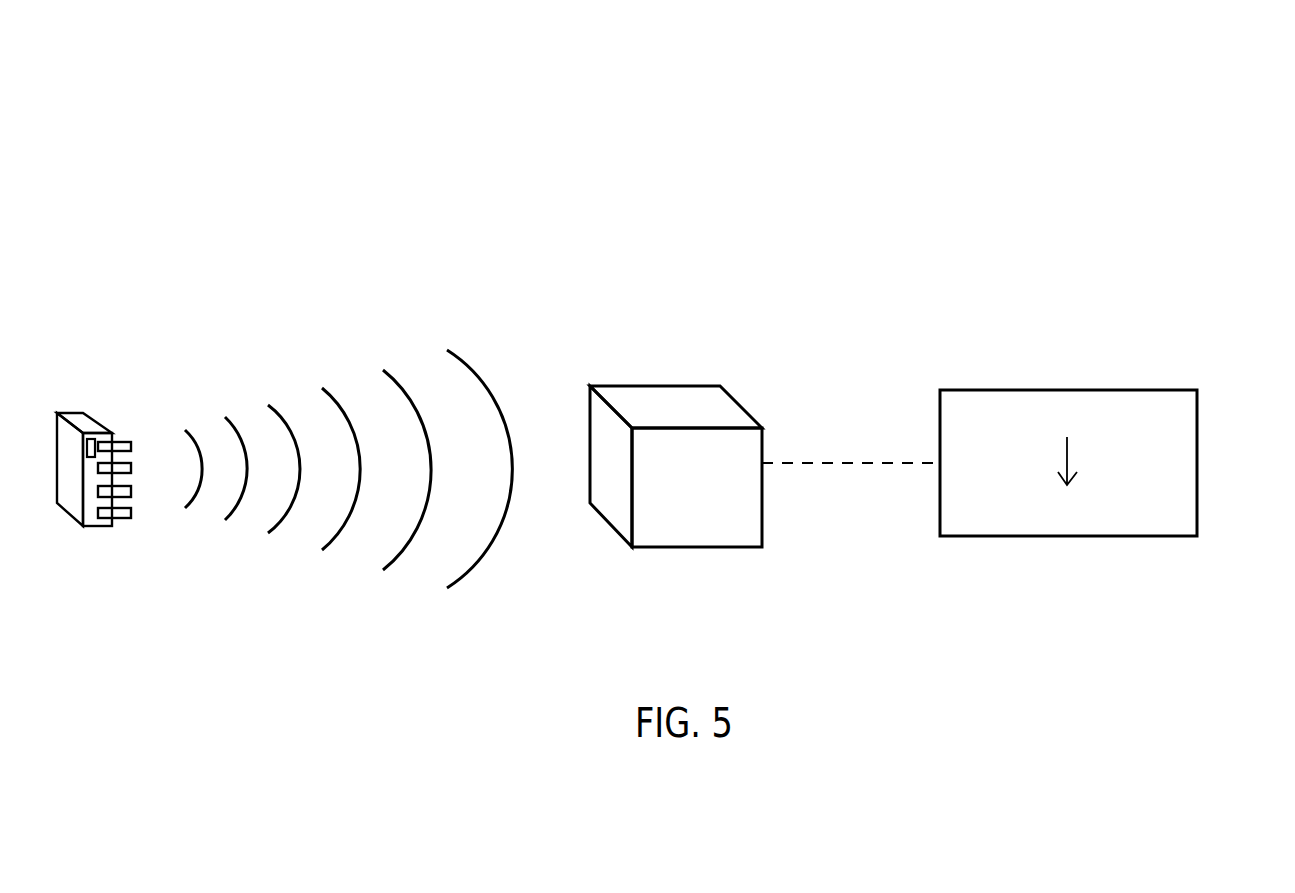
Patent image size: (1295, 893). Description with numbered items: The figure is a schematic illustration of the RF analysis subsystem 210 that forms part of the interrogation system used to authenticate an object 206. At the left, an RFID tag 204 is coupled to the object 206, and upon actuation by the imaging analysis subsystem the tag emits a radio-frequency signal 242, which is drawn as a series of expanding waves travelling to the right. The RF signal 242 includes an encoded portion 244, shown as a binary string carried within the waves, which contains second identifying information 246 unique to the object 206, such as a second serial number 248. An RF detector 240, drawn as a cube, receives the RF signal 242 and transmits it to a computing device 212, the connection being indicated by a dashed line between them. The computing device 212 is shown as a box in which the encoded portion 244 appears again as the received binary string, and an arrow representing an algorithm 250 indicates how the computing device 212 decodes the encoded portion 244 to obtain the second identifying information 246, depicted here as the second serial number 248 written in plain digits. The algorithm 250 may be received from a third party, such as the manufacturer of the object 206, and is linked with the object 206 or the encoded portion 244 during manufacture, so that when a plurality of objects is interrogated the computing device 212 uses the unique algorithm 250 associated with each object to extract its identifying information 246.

The radio-frequency analysis subsystem 210 is at (257, 115).
The object 206 is at (79, 412).
The radio-frequency identification tag 204 is at (91, 440).
The radio-frequency signal 242 is at (415, 328).
The encoded portion 244 is at (325, 495).
The radio-frequency detector 240 is at (656, 385).
The computing device 212 is at (1098, 390).
The algorithm 250 is at (1082, 452).
The second serial number 248 is at (1062, 527).
The second identifying information 246 is at (1112, 513).